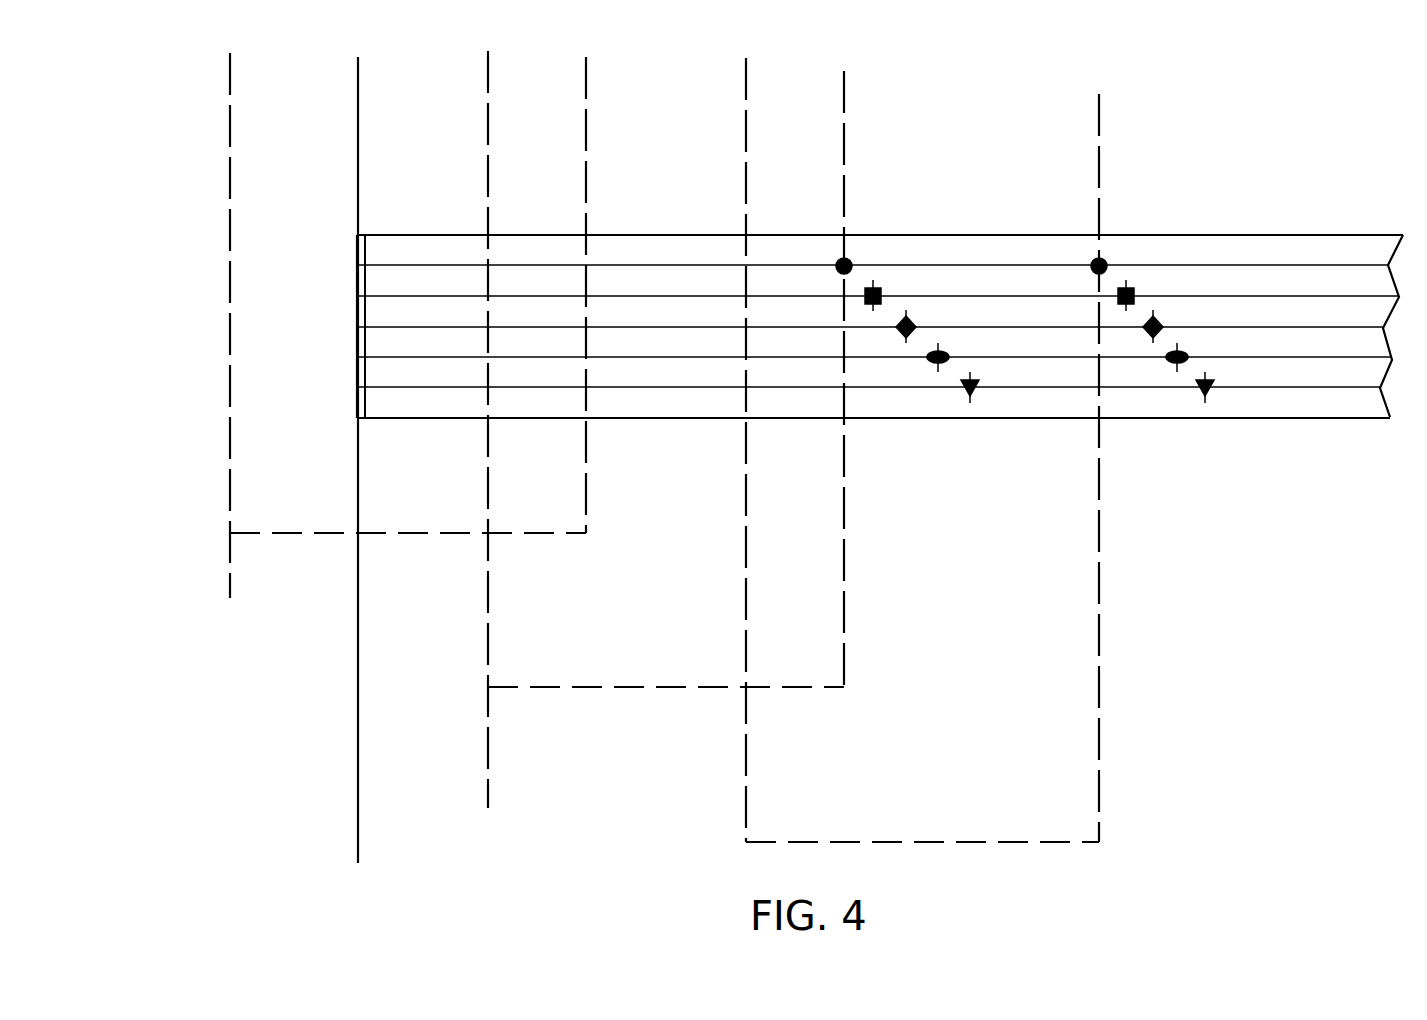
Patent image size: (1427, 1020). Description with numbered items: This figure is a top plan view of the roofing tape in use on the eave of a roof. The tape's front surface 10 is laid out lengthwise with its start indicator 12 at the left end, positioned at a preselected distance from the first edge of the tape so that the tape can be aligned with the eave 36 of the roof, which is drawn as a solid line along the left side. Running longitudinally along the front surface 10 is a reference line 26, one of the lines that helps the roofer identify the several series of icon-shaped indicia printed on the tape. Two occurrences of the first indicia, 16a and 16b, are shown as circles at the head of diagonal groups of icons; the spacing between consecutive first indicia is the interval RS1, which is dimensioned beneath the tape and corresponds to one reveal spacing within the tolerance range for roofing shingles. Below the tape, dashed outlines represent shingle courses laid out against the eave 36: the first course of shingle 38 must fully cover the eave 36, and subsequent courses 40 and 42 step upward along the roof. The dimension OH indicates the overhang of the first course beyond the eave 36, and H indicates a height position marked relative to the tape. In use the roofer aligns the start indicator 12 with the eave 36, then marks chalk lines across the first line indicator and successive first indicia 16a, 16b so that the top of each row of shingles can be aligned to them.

The front surface 10 is at (1245, 242).
The start indicator 12 is at (367, 255).
The first occurrence of first indicia 16a is at (850, 258).
The second occurrence of first indicia 16b is at (1105, 258).
The reference line 26 is at (960, 265).
The eave 36 is at (353, 742).
The first course of shingle 38 is at (410, 537).
The second region 40 is at (577, 688).
The third region 42 is at (1033, 842).
The height reference H is at (589, 246).
The overhang dimension OH is at (356, 578).
The interval of series of first indicia RS1 is at (744, 788).